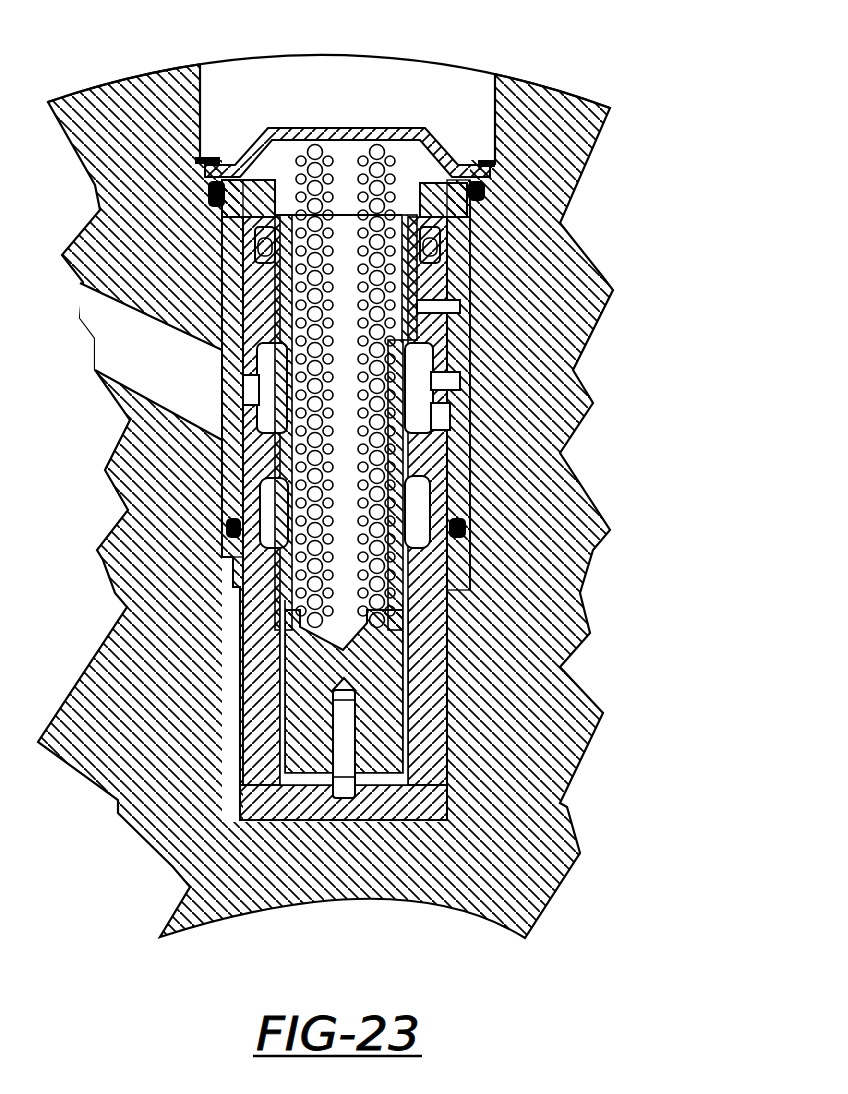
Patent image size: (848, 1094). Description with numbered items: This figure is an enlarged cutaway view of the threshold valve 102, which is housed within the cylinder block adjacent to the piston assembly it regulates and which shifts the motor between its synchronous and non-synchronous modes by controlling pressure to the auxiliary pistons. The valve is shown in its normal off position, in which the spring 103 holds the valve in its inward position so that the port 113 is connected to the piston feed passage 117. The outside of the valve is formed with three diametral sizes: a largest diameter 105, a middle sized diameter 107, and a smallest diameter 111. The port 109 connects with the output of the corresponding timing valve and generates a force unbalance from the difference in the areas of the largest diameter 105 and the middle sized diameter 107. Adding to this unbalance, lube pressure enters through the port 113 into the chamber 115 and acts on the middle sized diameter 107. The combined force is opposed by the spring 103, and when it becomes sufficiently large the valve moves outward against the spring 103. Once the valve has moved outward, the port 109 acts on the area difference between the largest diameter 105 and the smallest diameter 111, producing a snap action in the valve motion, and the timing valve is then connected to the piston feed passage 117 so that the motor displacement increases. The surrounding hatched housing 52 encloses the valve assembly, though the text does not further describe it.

The housing body 52 is at (555, 108).
The threshold valve 102 is at (433, 112).
The spring 103 is at (327, 213).
The largest diameter 105 is at (420, 323).
The middle sized diameter 107 is at (440, 385).
The port 109 is at (440, 284).
The smallest diameter 111 is at (462, 540).
The port 113 is at (430, 480).
The chamber 115 is at (403, 770).
The piston feed passage 117 is at (173, 371).